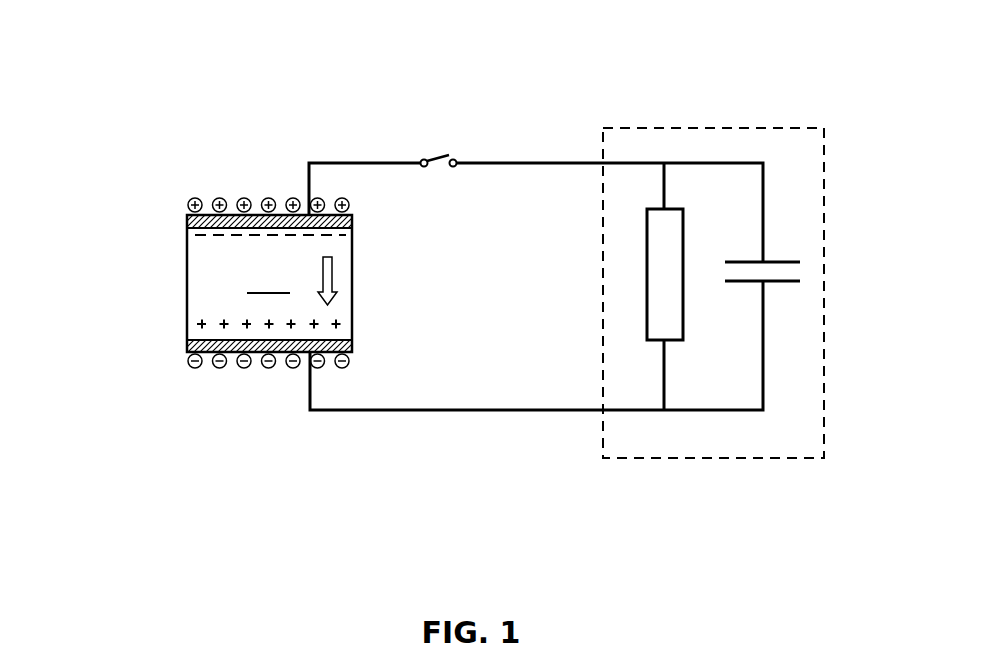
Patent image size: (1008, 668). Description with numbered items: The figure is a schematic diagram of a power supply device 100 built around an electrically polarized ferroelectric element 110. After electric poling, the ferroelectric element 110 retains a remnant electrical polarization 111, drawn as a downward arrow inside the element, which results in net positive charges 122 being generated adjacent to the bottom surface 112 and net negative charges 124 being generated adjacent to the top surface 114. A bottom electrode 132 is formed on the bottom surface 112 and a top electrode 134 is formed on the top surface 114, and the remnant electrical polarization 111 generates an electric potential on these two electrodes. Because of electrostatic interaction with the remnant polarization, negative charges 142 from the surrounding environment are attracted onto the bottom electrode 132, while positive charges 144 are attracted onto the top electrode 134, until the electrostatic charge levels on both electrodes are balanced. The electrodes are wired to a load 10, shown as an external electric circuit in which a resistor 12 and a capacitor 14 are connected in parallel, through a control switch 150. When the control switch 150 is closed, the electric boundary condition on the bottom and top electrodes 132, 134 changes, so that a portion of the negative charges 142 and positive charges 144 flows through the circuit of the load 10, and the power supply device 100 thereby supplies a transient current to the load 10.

The power supply device 100 is at (346, 75).
The electrically polarized ferroelectric element 110 is at (269, 283).
The remnant electrical polarization 111 is at (334, 280).
The bottom surface 112 is at (203, 349).
The top surface 114 is at (188, 242).
The net positive charges 122 is at (206, 312).
The net negative charges 124 is at (208, 242).
The bottom electrode 132 is at (207, 368).
The top electrode 134 is at (208, 216).
The negative charges 142 is at (269, 368).
The positive charges 144 is at (267, 198).
The control switch 150 is at (447, 152).
The load 10 is at (790, 459).
The resistor 12 is at (660, 318).
The capacitor 14 is at (778, 257).